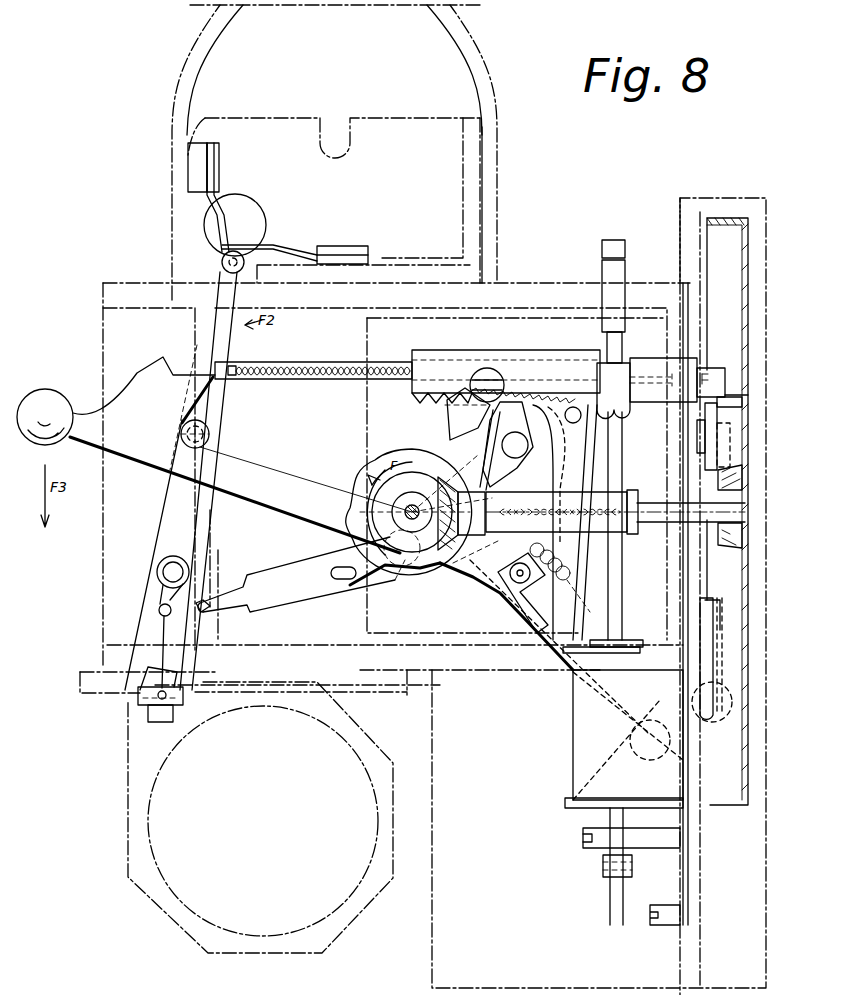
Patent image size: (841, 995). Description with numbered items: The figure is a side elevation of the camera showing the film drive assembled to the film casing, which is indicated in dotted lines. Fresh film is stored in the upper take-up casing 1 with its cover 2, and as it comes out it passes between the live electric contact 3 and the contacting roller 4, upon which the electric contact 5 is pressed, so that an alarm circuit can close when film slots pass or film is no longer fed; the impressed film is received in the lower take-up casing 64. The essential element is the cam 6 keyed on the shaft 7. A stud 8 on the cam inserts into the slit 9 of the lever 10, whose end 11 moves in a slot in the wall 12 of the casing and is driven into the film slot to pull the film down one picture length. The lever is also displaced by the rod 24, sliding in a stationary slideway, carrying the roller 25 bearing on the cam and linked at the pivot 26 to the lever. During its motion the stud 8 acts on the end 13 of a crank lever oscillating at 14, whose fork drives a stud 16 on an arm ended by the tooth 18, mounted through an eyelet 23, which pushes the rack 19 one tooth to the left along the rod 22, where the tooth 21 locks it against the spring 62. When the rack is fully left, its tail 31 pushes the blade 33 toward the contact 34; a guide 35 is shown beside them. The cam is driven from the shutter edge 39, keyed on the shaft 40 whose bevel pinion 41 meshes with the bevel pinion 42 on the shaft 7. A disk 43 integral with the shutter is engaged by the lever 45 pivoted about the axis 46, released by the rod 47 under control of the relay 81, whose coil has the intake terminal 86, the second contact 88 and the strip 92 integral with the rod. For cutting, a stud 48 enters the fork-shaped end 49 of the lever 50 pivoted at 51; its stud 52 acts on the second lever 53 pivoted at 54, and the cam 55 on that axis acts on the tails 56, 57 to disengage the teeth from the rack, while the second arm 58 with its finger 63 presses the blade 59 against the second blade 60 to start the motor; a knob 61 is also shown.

The take-up casing 1 is at (412, 130).
The cover 2 is at (497, 110).
The live electric contact 3 is at (290, 247).
The contacting roller 4 is at (220, 265).
The electric contact 5 is at (208, 203).
The cam 6 is at (388, 470).
The shaft 7 is at (360, 531).
The stud 8 is at (403, 582).
The slit 9 is at (344, 582).
The lever 10 is at (292, 604).
The end of lever 11 is at (210, 606).
The wall of the casing 12 is at (215, 573).
The end of crank lever 13 is at (444, 502).
The pivot of crank lever 14 is at (522, 463).
The stud 16 is at (470, 500).
The tooth 18 is at (452, 405).
The rack 19 is at (432, 357).
The tooth 21 is at (468, 420).
The rod 22 is at (265, 383).
The eyelet 23 is at (557, 522).
The rod 24 is at (607, 535).
The roller 25 is at (440, 465).
The pivot 26 is at (625, 502).
The tail of the rack 31 is at (640, 372).
The blade 33 is at (718, 375).
The contact 34 is at (715, 422).
The guide 35 is at (733, 467).
The shutter edge 39 is at (748, 655).
The shaft 40 is at (735, 513).
The bevel pinion 41 is at (452, 575).
The bevel pinion 42 is at (372, 488).
The disk 43 is at (745, 578).
The lever 45 is at (540, 385).
The axis 46 is at (486, 372).
The rod 47 is at (617, 462).
The stud 48 is at (155, 690).
The fork-shaped end 49 is at (166, 703).
The lever 50 is at (167, 522).
The pivot 51 is at (157, 580).
The stud 52 is at (205, 438).
The second lever 53 is at (293, 478).
The axis 54 is at (518, 578).
The cam 55 is at (533, 622).
The tail of crank lever 56 is at (562, 652).
The tail of crank lever 57 is at (590, 600).
The second arm 58 is at (575, 735).
The blade 59 is at (705, 722).
The second blade 60 is at (715, 708).
The knob 61 is at (200, 408).
The spring 62 is at (268, 366).
The finger 63 is at (655, 752).
The take-up casing 64 is at (142, 888).
The relay 81 is at (580, 805).
The intake terminal 86 is at (667, 922).
The second contact 88 is at (660, 838).
The strip 92 is at (607, 870).